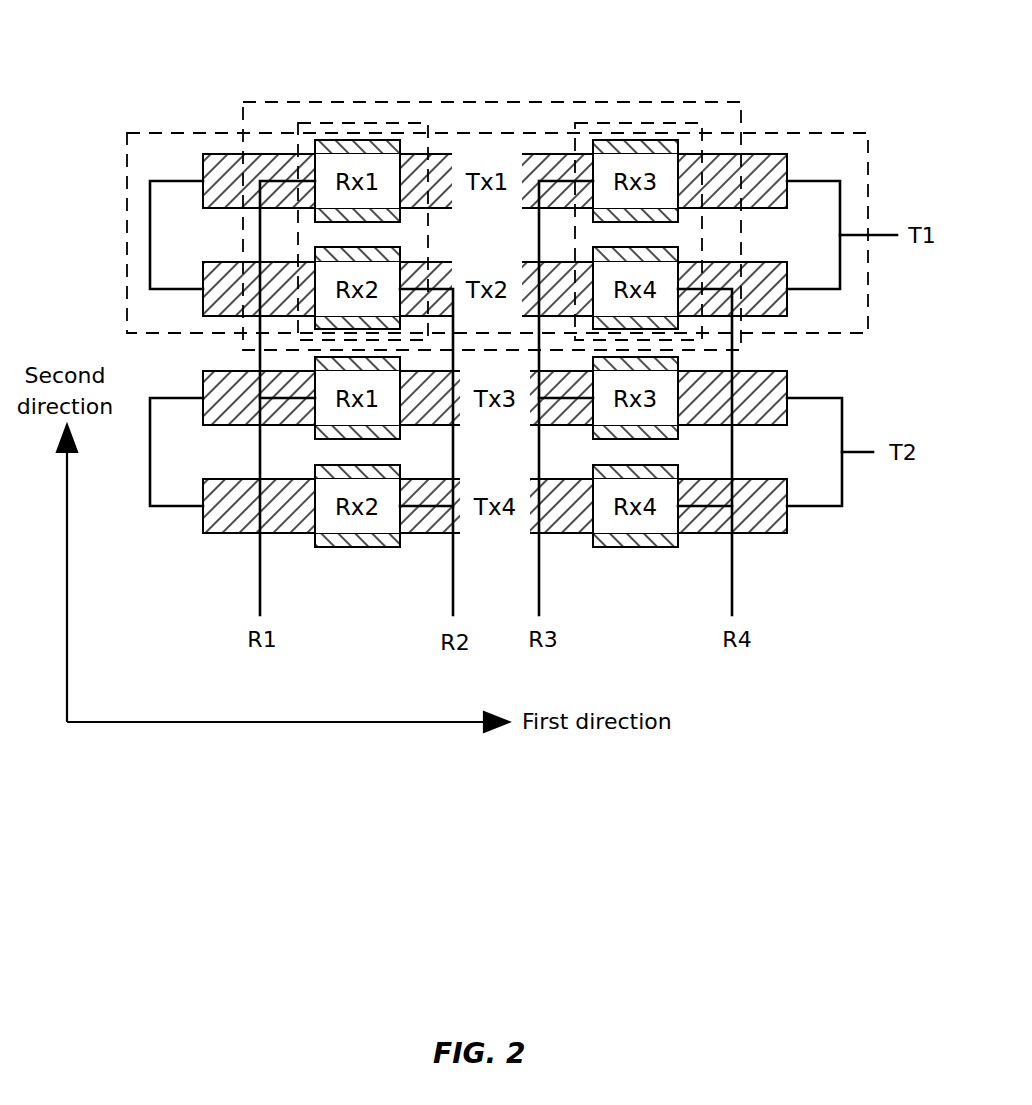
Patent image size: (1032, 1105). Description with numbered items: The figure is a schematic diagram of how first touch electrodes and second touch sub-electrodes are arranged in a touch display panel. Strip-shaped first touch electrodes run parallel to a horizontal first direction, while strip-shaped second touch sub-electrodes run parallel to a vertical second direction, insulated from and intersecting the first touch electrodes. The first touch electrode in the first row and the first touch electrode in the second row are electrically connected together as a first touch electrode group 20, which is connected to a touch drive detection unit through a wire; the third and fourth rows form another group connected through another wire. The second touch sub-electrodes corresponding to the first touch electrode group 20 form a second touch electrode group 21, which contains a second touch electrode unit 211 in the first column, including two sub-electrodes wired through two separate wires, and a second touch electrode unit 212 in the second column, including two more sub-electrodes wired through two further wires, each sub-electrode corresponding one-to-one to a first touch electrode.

The first touch electrode group 20 is at (813, 133).
The second touch electrode group 21 is at (475, 102).
The second touch electrode unit 211 is at (320, 123).
The second touch electrode unit 212 is at (660, 123).